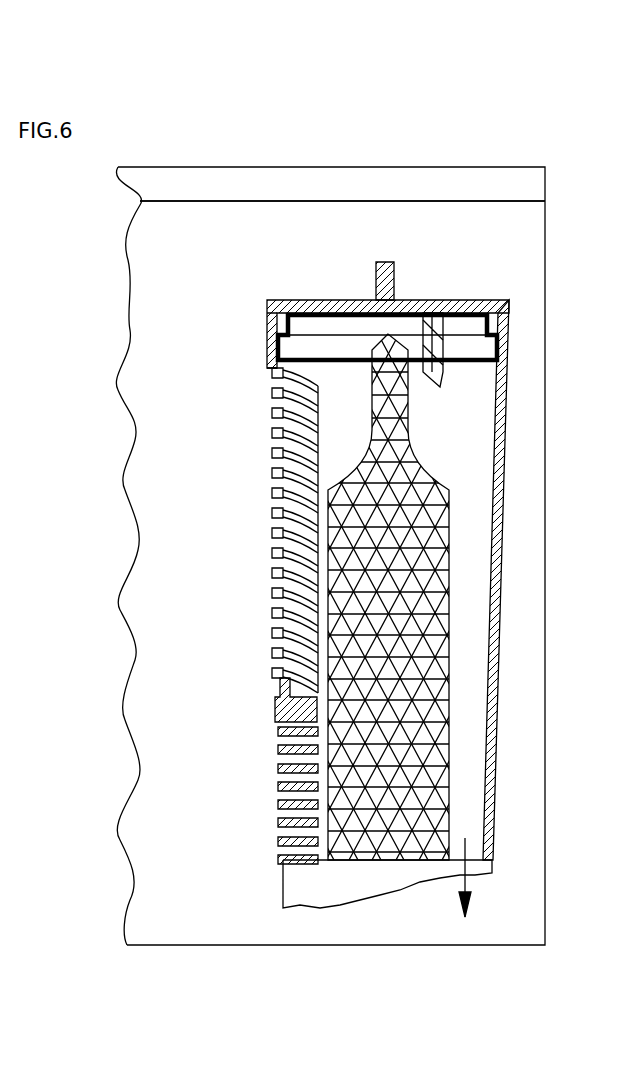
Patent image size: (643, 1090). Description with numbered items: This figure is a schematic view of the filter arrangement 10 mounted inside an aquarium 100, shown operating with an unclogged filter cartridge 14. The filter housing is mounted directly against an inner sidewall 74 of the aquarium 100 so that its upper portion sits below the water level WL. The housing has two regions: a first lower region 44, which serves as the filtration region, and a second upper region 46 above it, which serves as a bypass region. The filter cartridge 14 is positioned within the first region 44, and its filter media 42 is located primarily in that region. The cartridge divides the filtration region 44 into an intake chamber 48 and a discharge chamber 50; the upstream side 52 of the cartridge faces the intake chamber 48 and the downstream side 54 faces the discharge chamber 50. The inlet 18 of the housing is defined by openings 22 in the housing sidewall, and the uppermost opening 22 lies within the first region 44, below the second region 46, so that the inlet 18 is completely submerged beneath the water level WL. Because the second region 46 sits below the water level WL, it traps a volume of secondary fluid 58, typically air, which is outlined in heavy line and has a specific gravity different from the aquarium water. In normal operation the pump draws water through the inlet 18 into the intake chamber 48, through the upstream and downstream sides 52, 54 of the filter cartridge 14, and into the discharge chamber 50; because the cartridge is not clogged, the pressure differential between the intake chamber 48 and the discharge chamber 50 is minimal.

The aquarium 100 is at (548, 223).
The water level WL is at (400, 198).
The inner sidewall 74 is at (190, 262).
The filter arrangement 10 is at (465, 272).
The discharge chamber 50 is at (391, 589).
The downstream side 54 is at (450, 702).
The second region 46 is at (238, 308).
The secondary fluid 58 is at (343, 326).
The intake chamber 48 is at (356, 437).
The inlet 18 is at (266, 615).
The first region 44 is at (273, 615).
The openings 22 is at (297, 388).
The upstream side 52 is at (327, 686).
The filter cartridge 14 is at (344, 597).
The filter media 42 is at (432, 589).